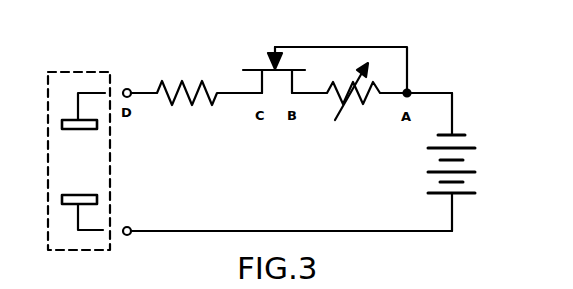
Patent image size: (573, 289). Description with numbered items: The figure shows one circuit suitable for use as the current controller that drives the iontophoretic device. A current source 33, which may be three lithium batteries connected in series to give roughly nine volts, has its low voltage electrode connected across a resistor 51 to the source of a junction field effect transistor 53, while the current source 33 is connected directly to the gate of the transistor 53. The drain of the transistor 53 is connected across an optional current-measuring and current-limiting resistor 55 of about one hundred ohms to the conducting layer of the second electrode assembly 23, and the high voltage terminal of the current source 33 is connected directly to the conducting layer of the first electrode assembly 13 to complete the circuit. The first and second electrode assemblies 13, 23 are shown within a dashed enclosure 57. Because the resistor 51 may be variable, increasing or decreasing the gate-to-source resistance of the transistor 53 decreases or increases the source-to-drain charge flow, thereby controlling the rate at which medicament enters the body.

The gas discharge tube / lamp enclosure 57 is at (75, 72).
The second electrode assembly 23 is at (97, 126).
The first electrode assembly 13 is at (97, 199).
The current-measuring and current-limiting resistor 55 is at (171, 101).
The junction field effect transistor 53 is at (262, 79).
The resistor 51 is at (356, 104).
The current source 33 is at (428, 174).